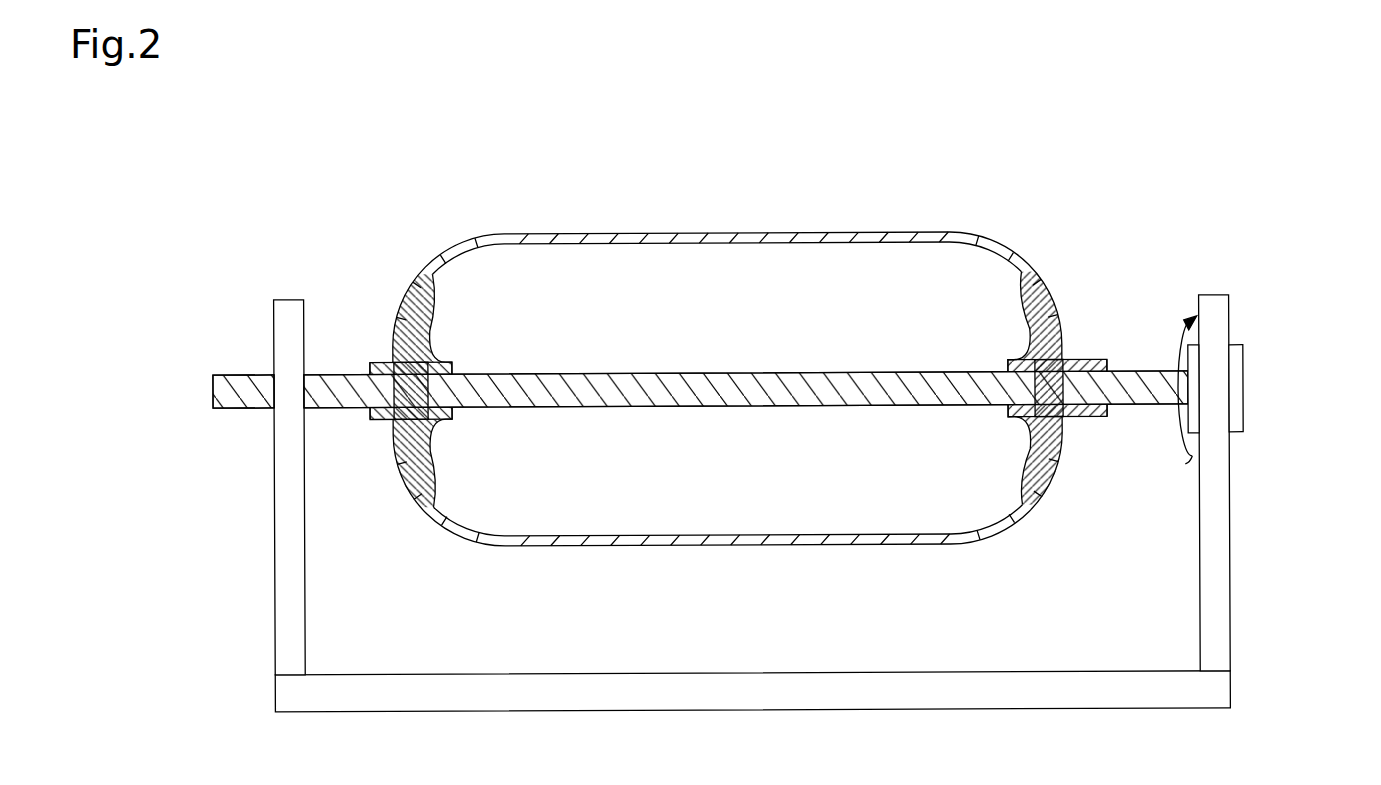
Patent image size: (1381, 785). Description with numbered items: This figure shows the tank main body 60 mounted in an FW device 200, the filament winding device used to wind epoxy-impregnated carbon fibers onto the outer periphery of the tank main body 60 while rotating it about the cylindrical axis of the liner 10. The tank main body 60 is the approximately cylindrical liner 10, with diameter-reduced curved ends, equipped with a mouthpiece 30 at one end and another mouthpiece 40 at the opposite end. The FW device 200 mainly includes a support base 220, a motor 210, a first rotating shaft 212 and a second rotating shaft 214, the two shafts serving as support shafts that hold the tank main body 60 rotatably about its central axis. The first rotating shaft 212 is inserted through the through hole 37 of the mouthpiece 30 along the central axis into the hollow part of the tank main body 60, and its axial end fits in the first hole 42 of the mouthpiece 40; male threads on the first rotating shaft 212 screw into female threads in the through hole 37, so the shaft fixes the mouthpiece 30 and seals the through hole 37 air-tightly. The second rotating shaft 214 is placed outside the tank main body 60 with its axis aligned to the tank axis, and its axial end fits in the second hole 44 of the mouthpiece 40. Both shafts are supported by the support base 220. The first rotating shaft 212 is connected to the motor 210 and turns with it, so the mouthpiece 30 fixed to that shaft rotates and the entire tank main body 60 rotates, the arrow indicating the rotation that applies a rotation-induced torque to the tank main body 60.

The liner 10 is at (777, 540).
The mouthpiece 30 is at (1060, 430).
The through hole 37 is at (1100, 378).
The mouthpiece 40 is at (402, 343).
The first hole 42 is at (456, 373).
The second hole 44 is at (370, 374).
The tank main body 60 is at (1068, 219).
The FW device 200 is at (1286, 522).
The motor 210 is at (1243, 370).
The first rotating shaft 212 is at (860, 405).
The second rotating shaft 214 is at (331, 405).
The support base 220 is at (1230, 650).